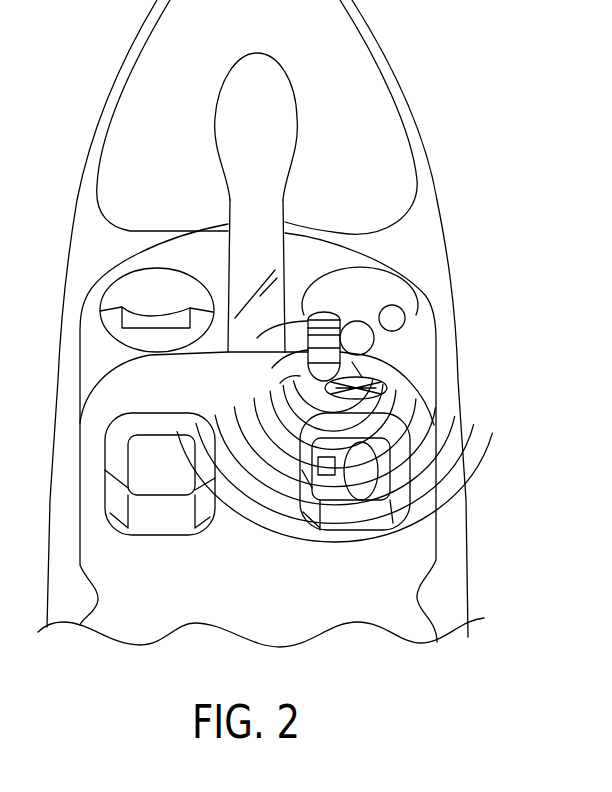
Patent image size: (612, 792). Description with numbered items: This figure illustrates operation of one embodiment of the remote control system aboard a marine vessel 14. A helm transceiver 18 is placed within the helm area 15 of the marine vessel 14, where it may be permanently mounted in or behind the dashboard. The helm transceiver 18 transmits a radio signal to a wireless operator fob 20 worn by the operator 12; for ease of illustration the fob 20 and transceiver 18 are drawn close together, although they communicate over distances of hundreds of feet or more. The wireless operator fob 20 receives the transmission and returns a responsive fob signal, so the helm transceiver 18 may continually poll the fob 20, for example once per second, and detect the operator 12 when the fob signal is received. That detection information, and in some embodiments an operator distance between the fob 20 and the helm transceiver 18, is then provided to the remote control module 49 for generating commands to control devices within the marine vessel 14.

The operator 12 is at (443, 506).
The marine vessel 14 is at (395, 68).
The helm area 15 is at (440, 390).
The helm transceiver 18 is at (300, 318).
The wireless operator fob 20 is at (337, 503).
The remote control module 49 is at (340, 350).